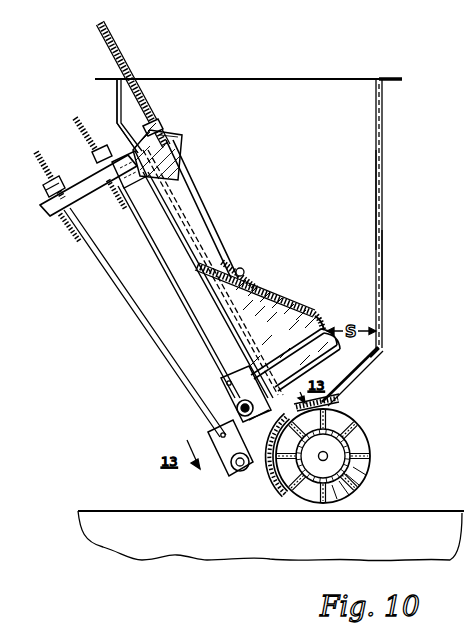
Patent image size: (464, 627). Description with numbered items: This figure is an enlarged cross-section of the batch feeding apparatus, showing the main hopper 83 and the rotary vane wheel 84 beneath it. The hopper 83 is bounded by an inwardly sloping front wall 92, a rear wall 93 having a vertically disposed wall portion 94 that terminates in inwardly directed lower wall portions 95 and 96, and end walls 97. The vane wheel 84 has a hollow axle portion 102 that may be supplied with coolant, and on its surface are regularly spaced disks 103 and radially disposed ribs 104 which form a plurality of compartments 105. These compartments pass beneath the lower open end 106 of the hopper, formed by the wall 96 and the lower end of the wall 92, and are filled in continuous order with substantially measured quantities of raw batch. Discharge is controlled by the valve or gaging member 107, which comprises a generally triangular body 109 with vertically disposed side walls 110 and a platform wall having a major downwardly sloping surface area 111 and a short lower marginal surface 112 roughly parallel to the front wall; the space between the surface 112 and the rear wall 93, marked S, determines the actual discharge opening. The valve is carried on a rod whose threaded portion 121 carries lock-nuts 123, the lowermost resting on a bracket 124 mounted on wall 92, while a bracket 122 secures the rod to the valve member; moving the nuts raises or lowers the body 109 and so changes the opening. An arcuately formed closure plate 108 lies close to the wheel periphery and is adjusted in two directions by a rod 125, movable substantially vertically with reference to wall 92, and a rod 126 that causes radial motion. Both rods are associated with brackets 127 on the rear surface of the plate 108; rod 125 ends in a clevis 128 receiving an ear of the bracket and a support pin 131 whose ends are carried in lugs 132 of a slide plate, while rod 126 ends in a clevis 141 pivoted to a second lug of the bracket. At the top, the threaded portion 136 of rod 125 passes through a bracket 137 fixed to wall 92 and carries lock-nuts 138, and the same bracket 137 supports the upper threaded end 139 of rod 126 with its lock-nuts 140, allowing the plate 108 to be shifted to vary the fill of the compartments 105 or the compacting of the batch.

The main hopper 83 is at (348, 200).
The rotary vane wheel 84 is at (350, 480).
The front wall 92 is at (197, 187).
The rear wall 93 is at (384, 218).
The vertically disposed wall portion 94 is at (383, 249).
The inwardly directed lower wall portion 95 is at (364, 364).
The inwardly directed lower wall portion 96 is at (352, 376).
The end walls 97 is at (266, 112).
The hollow axle portion 102 is at (349, 486).
The disks 103 is at (363, 470).
The radially disposed ribs 104 is at (358, 440).
The compartments 105 is at (368, 440).
The lower open end 106 is at (300, 417).
The valve or gaging members 107 is at (253, 242).
The closure plate 108 is at (278, 494).
The body 109 is at (264, 297).
The side walls 110 is at (297, 334).
The downwardly sloping surface area 111 is at (292, 305).
The lower marginal surface 112 is at (322, 320).
The threaded portion 121 is at (118, 54).
The bracket 122 is at (253, 262).
The lock-nuts 123 is at (163, 124).
The bracket 124 is at (181, 140).
The rod 125 is at (153, 258).
The rod 126 is at (152, 338).
The brackets 127 is at (254, 464).
The clevis 128 is at (227, 384).
The support pin 131 is at (239, 404).
The lugs 132 is at (237, 408).
The threaded portion 136 is at (87, 118).
The bracket 137 is at (102, 182).
The lock-nuts 138 is at (90, 150).
The upper threaded end 139 is at (40, 152).
The lock-nuts 140 is at (63, 174).
The clevis 141 is at (228, 459).